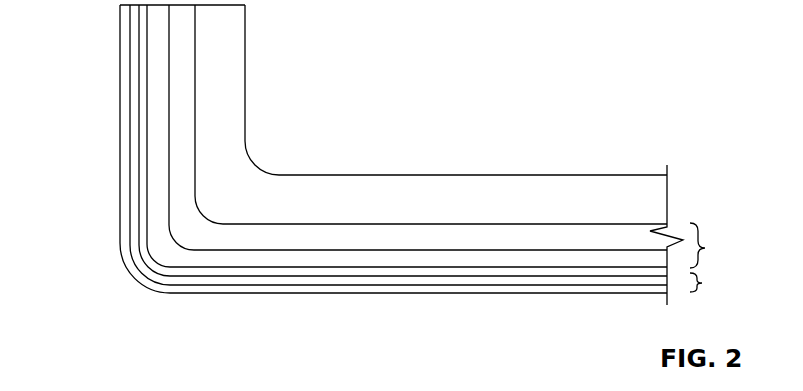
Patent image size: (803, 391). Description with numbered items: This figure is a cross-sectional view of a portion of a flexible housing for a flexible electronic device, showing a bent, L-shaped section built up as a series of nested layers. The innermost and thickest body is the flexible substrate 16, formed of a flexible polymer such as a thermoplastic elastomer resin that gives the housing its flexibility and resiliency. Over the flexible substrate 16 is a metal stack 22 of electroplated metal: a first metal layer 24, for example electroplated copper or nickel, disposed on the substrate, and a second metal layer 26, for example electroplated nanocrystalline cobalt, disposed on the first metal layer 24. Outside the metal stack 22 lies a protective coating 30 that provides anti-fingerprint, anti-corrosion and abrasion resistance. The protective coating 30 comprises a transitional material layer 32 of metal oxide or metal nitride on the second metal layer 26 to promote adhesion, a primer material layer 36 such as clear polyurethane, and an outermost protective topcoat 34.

The flexible substrate 16 is at (400, 188).
The metal stack 22 is at (713, 245).
The first metal layer 24 is at (547, 238).
The second metal layer 26 is at (488, 260).
The protective coating 30 is at (712, 285).
The transitional material layer 32 is at (400, 270).
The protective topcoat 34 is at (263, 287).
The primer material layer 36 is at (325, 275).